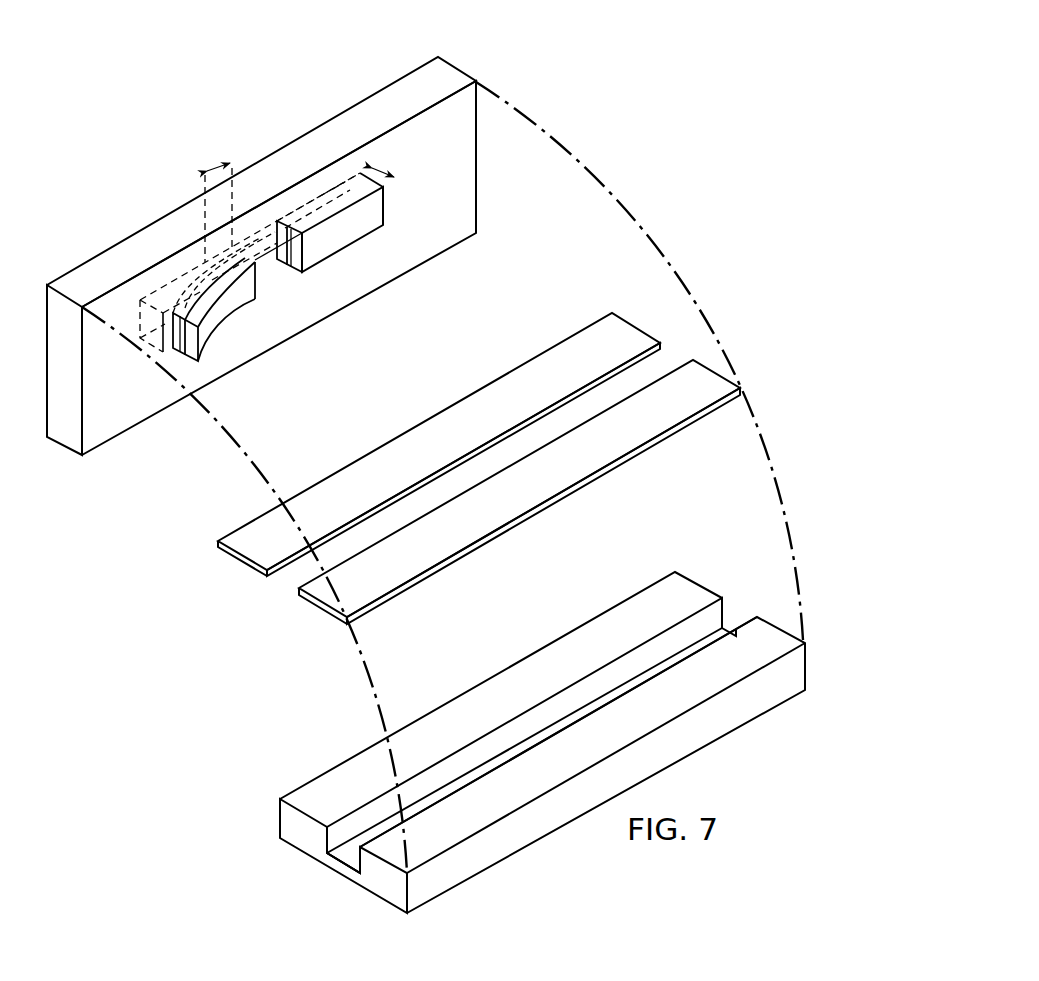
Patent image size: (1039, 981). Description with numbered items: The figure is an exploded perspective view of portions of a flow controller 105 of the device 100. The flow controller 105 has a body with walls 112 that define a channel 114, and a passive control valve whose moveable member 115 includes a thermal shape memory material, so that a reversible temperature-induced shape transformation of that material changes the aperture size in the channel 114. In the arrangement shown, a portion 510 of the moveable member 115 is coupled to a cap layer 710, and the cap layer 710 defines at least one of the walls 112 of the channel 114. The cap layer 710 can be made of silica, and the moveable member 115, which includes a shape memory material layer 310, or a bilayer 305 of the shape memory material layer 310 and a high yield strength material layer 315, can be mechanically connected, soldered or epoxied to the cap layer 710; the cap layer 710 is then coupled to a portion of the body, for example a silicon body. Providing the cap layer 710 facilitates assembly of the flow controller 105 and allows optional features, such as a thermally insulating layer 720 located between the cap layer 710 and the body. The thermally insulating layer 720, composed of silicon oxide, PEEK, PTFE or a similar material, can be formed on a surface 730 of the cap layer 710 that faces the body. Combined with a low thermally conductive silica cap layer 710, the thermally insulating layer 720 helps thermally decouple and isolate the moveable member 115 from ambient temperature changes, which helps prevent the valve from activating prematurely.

The device 100 is at (660, 65).
The flow controller 105 is at (272, 824).
The walls 112 is at (277, 280).
The channel 114 is at (348, 852).
The moveable member 115 is at (230, 328).
The bilayer 305 is at (397, 160).
The shape memory material layer 310 is at (379, 207).
The high yield strength material layer 315 is at (328, 196).
The portion of the moveable member 510 is at (219, 196).
The cap layer 710 is at (160, 218).
The thermally insulating layer 720 is at (240, 563).
The surface of the cap layer 730 is at (473, 172).